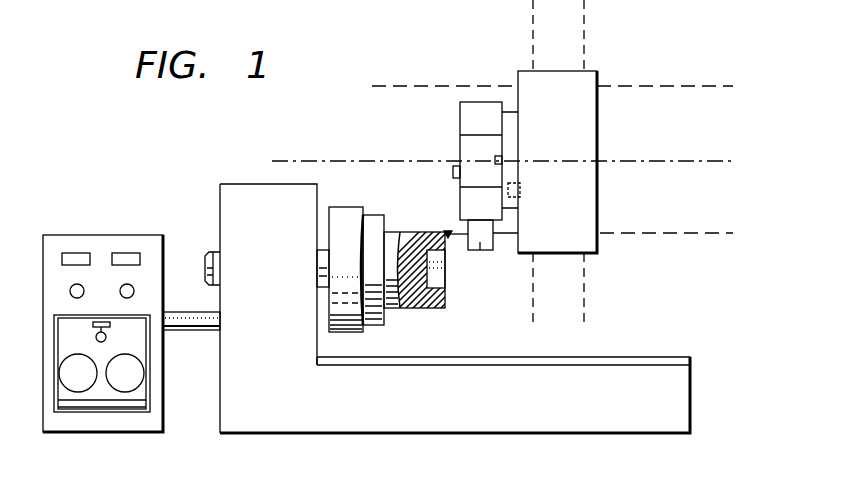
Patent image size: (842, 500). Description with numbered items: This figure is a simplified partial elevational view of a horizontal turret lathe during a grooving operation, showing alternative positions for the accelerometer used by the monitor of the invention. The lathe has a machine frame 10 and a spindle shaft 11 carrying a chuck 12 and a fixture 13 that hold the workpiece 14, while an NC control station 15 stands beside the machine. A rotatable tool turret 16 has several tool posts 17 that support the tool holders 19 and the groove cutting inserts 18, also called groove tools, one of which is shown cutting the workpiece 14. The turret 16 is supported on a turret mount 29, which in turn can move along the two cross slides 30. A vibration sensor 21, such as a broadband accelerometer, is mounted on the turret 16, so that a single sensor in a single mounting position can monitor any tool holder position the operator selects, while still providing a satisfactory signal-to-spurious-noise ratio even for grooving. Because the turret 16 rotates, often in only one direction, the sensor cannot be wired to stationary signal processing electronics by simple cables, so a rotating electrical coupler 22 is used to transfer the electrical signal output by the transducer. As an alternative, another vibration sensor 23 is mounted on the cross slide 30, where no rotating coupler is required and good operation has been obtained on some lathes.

The machine frame 10 is at (690, 402).
The spindle shaft 11 is at (215, 250).
The chuck 12 is at (342, 207).
The fixture 13 is at (370, 215).
The workpiece 14 is at (445, 308).
The NC control station 15 is at (89, 232).
The rotatable tool turret 16 is at (482, 102).
The tool post 17 is at (484, 250).
The groove cutting insert 18 is at (447, 232).
The tool holder 19 is at (458, 232).
The vibration sensor 21 is at (453, 172).
The rotating electrical coupler 22 is at (502, 160).
The vibration sensor 23 is at (520, 190).
The turret mount 29 is at (578, 153).
The cross slides 30 is at (585, 35).